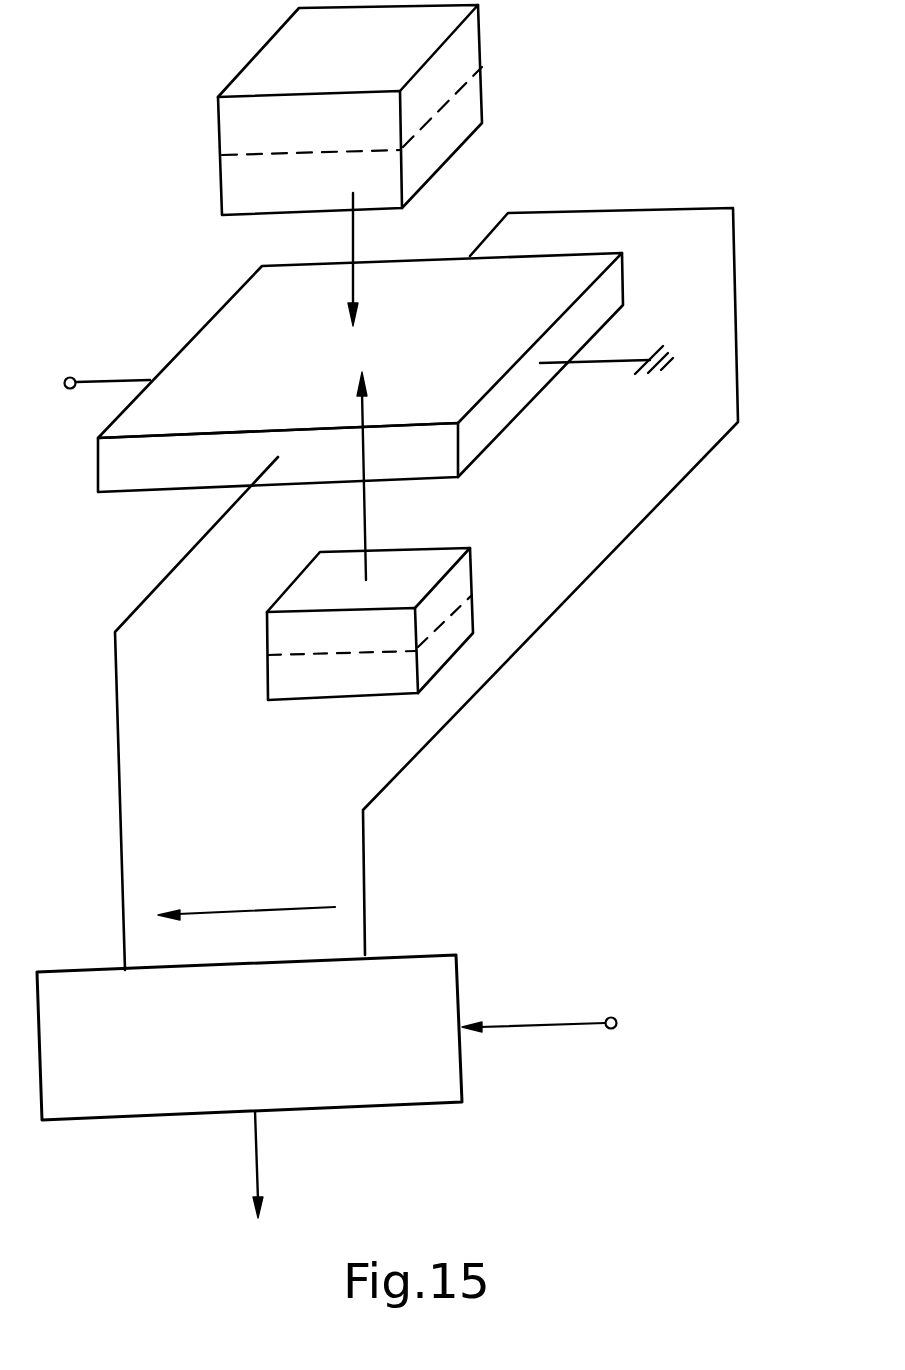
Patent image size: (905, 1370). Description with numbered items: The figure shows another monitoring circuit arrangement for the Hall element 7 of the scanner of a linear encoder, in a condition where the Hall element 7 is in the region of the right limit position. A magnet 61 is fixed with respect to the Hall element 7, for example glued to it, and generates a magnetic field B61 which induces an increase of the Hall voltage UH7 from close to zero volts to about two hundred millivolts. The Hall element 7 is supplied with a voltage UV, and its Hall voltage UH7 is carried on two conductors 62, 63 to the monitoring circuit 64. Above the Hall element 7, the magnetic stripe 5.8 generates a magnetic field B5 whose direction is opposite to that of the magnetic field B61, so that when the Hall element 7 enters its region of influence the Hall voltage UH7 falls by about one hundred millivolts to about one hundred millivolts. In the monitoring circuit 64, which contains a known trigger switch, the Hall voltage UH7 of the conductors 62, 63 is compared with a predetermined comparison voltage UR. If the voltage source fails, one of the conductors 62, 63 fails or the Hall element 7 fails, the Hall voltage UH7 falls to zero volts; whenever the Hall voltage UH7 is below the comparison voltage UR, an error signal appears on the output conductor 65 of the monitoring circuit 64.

The magnetic stripe 5.8 is at (477, 43).
The Hall element 7 is at (508, 417).
The electromagnet 61 is at (468, 580).
The conductor 62 is at (627, 203).
The conductor 63 is at (207, 530).
The monitoring circuit 64 is at (407, 955).
The output conductor 65 is at (256, 1158).
The magnetic field B5 is at (358, 284).
The magnetic field B61 is at (365, 417).
The supply voltage UV is at (105, 364).
The Hall voltage UH7 is at (246, 897).
The comparison voltage UR is at (546, 1004).